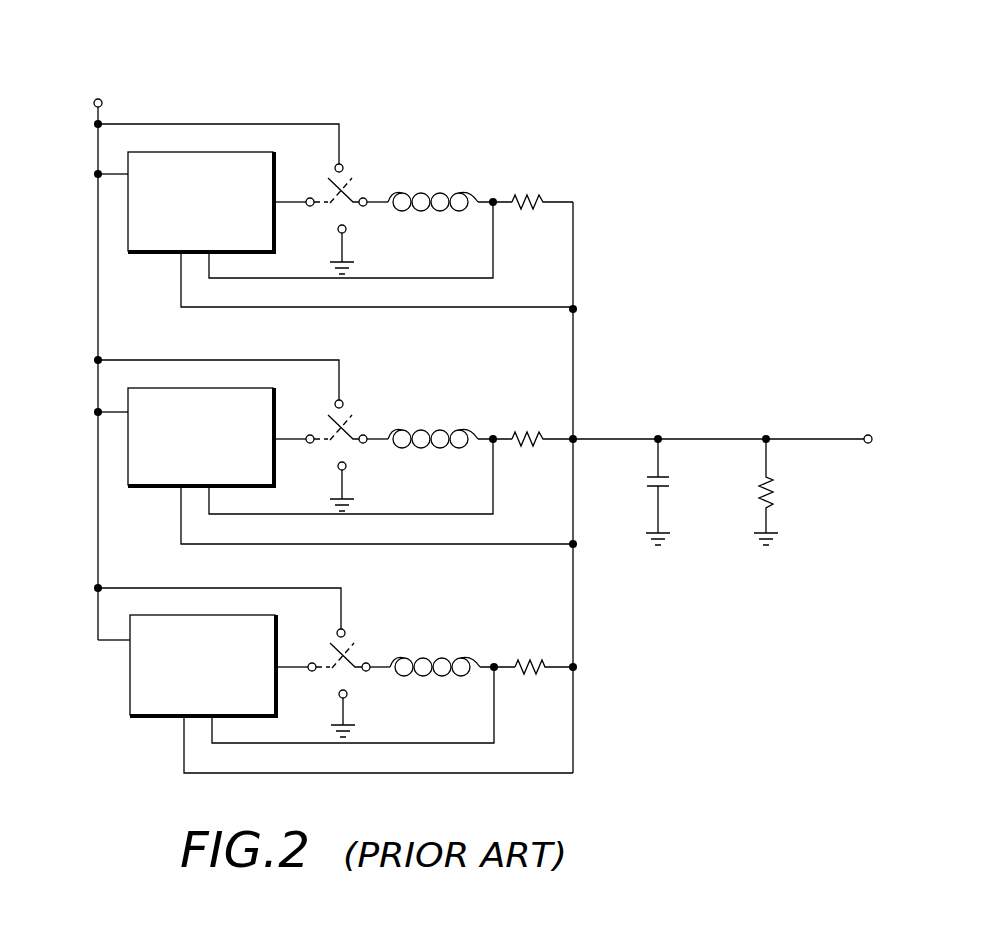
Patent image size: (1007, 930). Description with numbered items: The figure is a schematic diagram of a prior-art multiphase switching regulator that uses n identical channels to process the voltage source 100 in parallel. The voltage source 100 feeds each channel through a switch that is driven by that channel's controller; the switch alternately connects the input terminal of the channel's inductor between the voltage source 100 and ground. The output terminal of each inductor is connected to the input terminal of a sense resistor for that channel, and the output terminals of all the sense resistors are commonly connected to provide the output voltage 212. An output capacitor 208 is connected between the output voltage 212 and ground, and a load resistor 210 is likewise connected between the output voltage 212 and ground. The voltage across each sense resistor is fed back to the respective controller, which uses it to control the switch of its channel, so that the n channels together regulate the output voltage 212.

The voltage source 100 is at (105, 65).
The output capacitor 208 is at (642, 477).
The load resistor 210 is at (803, 507).
The output voltage 212 is at (927, 458).